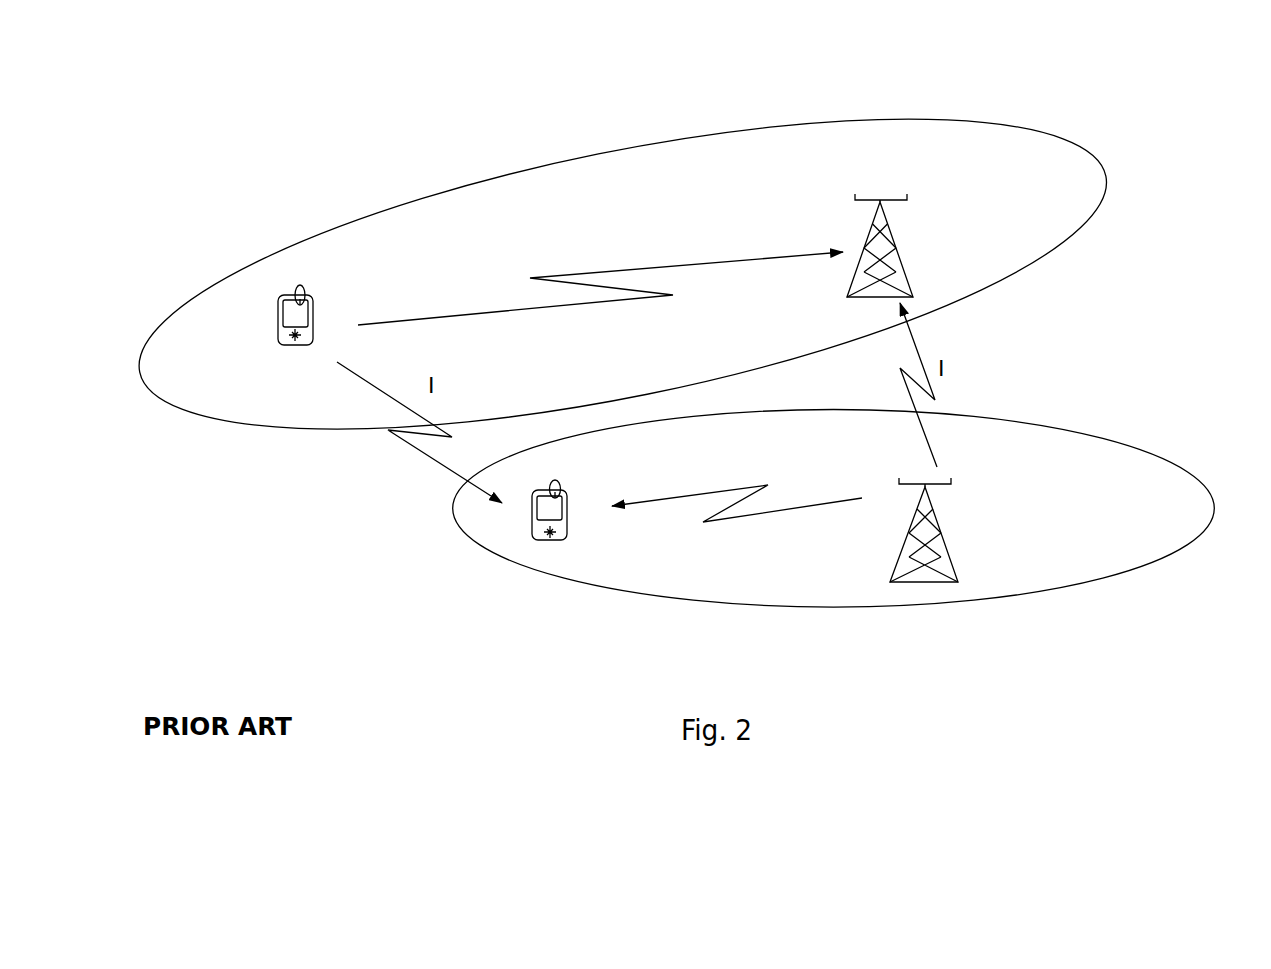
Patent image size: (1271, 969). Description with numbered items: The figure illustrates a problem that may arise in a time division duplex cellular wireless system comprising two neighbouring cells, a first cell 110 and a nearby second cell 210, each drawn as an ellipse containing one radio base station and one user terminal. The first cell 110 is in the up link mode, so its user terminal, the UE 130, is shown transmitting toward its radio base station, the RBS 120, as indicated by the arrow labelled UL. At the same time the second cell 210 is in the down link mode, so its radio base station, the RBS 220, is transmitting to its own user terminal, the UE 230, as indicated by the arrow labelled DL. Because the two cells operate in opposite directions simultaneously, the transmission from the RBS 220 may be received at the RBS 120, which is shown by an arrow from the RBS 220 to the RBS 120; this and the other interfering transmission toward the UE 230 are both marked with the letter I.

The first cell 110 is at (463, 162).
The radio base station 120 is at (947, 195).
The user terminal 130 is at (252, 317).
The second cell 210 is at (1127, 437).
The radio base station 220 is at (968, 508).
The user terminal 230 is at (523, 549).